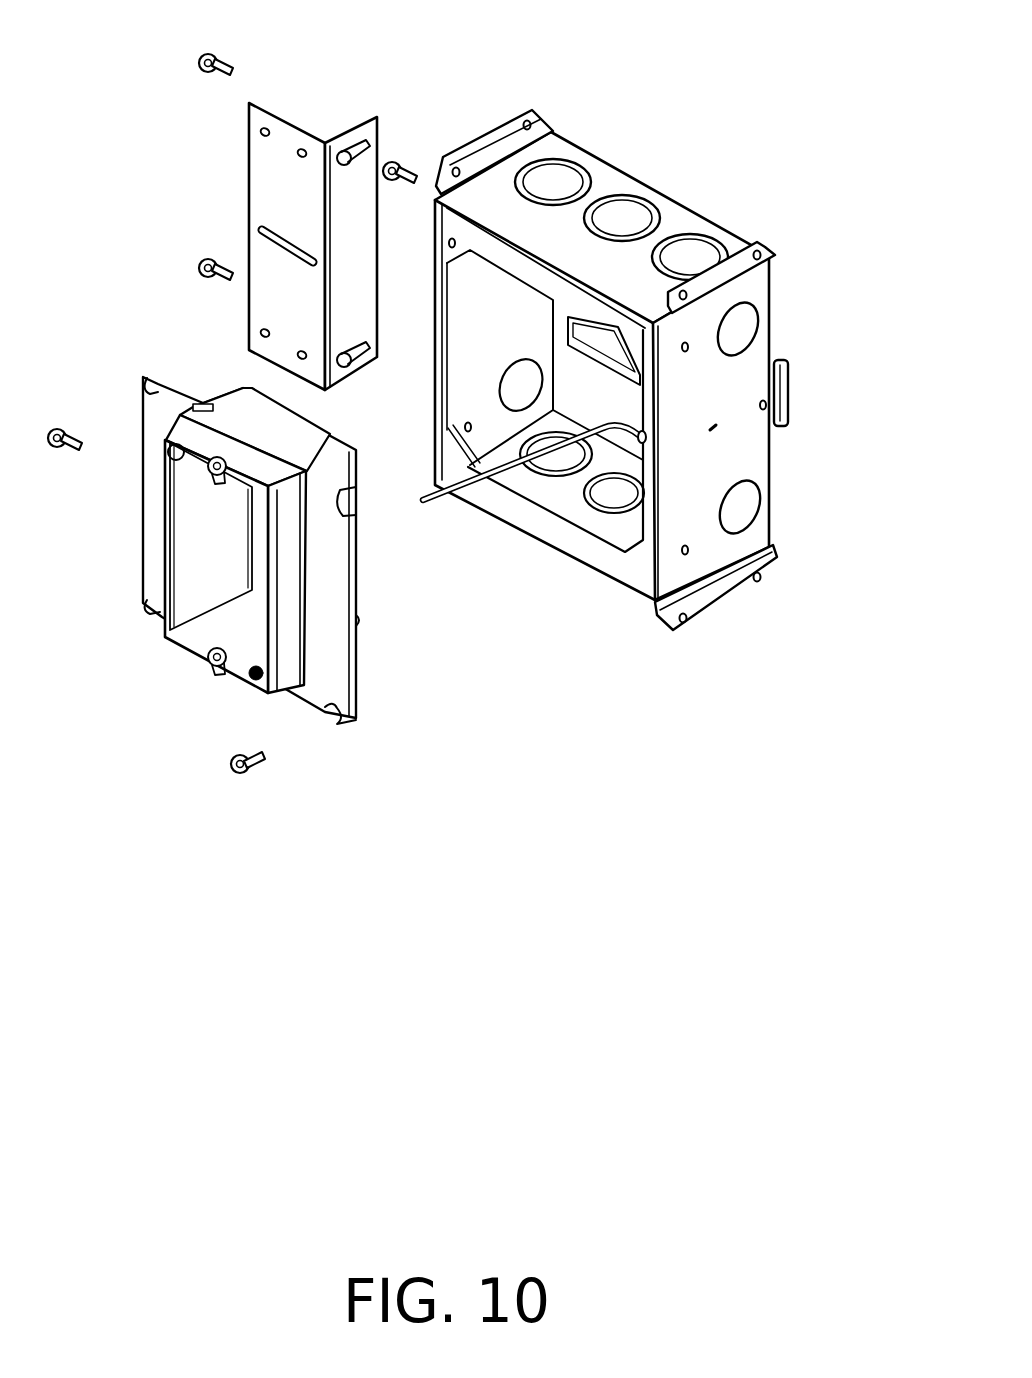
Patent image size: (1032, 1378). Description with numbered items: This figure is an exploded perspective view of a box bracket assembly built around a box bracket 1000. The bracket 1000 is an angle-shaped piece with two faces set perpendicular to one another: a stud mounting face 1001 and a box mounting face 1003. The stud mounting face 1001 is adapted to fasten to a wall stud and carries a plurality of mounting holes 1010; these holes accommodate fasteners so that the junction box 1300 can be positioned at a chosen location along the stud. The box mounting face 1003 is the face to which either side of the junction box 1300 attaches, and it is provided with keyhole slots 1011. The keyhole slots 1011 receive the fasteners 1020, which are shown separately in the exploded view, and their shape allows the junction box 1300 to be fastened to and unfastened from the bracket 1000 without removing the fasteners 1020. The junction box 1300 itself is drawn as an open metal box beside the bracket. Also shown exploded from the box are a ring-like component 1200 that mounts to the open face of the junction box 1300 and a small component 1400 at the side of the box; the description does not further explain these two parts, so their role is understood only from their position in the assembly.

The box bracket 1000 is at (270, 103).
The stud mounting face 1001 is at (267, 205).
The box mounting face 1003 is at (370, 205).
The mounting holes 1010 is at (302, 353).
The keyhole slots 1011 is at (345, 143).
The fasteners 1020 is at (200, 260).
The mud ring / plaster ring 1200 is at (187, 387).
The junction box 1300 is at (585, 152).
The grounding tab 1400 is at (783, 357).